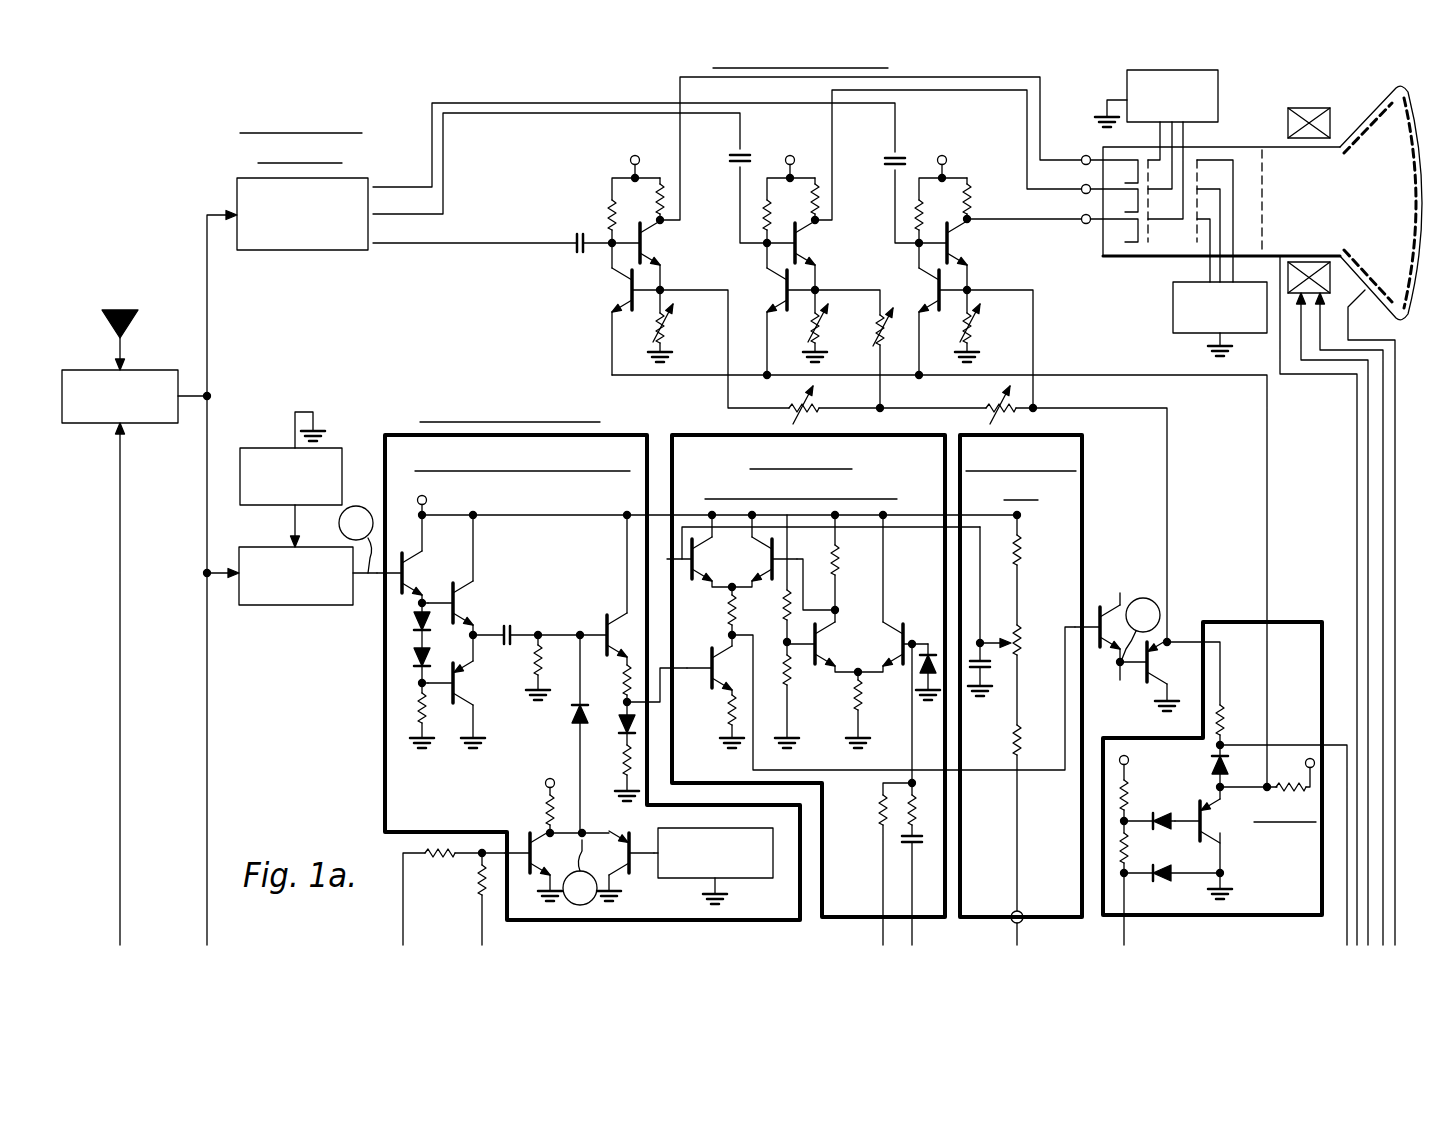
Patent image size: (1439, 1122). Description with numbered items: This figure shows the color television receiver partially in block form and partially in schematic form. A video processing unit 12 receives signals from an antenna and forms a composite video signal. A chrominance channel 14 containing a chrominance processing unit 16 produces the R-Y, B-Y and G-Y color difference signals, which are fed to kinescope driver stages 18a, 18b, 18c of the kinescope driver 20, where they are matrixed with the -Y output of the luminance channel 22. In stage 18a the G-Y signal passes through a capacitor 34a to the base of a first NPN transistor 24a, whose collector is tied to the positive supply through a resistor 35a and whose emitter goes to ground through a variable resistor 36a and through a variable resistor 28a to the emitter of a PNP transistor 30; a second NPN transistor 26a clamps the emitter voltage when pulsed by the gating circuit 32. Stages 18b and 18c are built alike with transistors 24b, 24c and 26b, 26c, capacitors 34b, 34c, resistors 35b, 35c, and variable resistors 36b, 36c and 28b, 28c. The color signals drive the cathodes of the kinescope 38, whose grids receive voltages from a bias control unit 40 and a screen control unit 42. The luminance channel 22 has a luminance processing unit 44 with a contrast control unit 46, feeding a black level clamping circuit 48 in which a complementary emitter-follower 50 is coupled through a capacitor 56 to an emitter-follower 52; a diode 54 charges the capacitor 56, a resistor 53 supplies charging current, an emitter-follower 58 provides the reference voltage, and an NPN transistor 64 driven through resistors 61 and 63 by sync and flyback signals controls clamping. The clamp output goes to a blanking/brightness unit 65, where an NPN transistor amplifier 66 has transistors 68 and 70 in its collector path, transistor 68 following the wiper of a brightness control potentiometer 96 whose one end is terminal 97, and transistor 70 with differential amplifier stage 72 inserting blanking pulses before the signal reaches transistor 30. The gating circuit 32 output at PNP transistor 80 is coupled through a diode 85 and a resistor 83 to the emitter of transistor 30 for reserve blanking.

The video processing unit 12 is at (156, 368).
The chrominance channel 14 is at (285, 100).
The chrominance processing unit 16 is at (320, 250).
The kinescope driver stage 18a is at (653, 148).
The kinescope driver stage 18b is at (808, 148).
The kinescope driver stage 18c is at (960, 148).
The kinescope driver 20 is at (915, 65).
The luminance channel 22 is at (420, 393).
The first NPN transistor 24a is at (695, 254).
The first NPN transistor 24b is at (850, 254).
The first NPN transistor 24c is at (1002, 254).
The second NPN transistor 26a is at (576, 305).
The second NPN transistor 26b is at (731, 305).
The second NPN transistor 26c is at (895, 305).
The variable resistor 28a is at (793, 404).
The variable resistor 28b is at (878, 348).
The variable resistor 28c is at (991, 404).
The PNP transistor 30 is at (1137, 652).
The gating circuit 32 is at (1272, 853).
The capacitor 34a is at (578, 243).
The capacitor 34b is at (738, 151).
The capacitor 34c is at (895, 154).
The resistor 35a is at (668, 205).
The resistor 35b is at (826, 205).
The resistor 35c is at (965, 203).
The variable resistor 36a is at (671, 340).
The variable resistor 36b is at (824, 318).
The variable resistor 36c is at (980, 339).
The kinescope 38 is at (1379, 71).
The bias control unit 40 is at (1220, 98).
The screen control unit 42 is at (1172, 300).
The luminance processing unit 44 is at (310, 605).
The contrast control unit 46 is at (273, 448).
The black level clamping circuit 48 is at (519, 500).
The complementary emitter-follower 50 is at (484, 608).
The emitter-follower 52 is at (591, 602).
The resistor 53 is at (543, 803).
The diode 54 is at (573, 710).
The capacitor 56 is at (515, 620).
The emitter-follower 58 is at (592, 867).
The resistor 61 is at (424, 849).
The resistor 63 is at (480, 900).
The NPN transistor 64 is at (543, 867).
The blanking/brightness unit 65 is at (907, 567).
The NPN transistor amplifier 66 is at (684, 645).
The NPN transistor 68 is at (707, 570).
The NPN transistor 70 is at (745, 570).
The differential amplifier stage 72 is at (845, 650).
The PNP transistor 80 is at (1220, 835).
The resistor 83 is at (1223, 716).
The diode 85 is at (1224, 764).
The brightness control potentiometer 96 is at (1042, 535).
The terminal 97 is at (1022, 914).